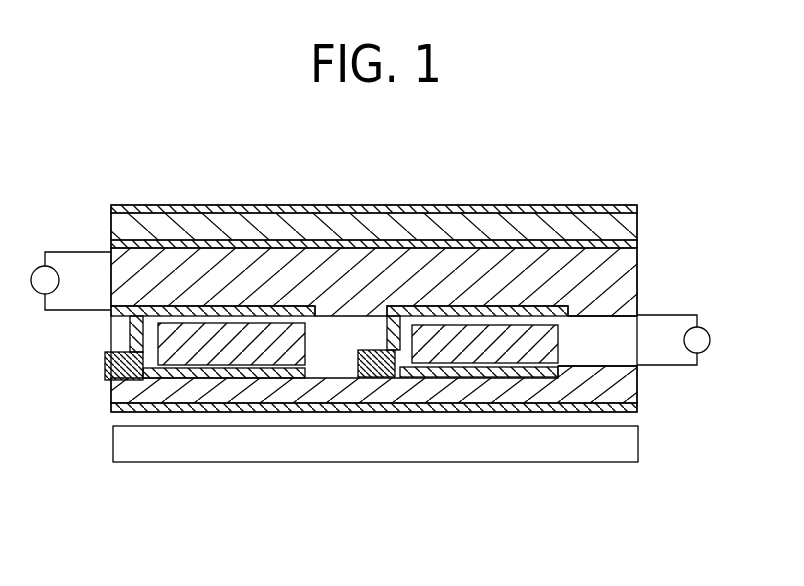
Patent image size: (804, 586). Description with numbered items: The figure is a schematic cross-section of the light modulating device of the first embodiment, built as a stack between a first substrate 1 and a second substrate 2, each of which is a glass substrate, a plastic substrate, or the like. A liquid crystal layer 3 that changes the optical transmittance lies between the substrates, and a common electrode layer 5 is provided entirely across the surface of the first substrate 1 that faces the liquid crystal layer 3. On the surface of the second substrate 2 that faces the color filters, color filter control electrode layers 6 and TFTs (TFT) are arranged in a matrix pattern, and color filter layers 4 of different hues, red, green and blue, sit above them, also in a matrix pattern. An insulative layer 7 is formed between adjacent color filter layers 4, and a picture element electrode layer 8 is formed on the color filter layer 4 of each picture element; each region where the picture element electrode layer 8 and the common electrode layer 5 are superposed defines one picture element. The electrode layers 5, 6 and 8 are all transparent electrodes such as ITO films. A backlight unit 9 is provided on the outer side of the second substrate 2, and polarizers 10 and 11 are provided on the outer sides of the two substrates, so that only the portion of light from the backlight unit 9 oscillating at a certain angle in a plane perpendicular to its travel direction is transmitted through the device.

The first substrate 1 is at (150, 228).
The polarizer 11 is at (250, 210).
The common electrode layer 5 is at (290, 245).
The liquid crystal layer 3 is at (595, 262).
The picture element electrode layer 8 is at (307, 307).
The insulative layer 7 is at (615, 328).
The color filter layer 4 is at (243, 350).
The color filter control electrode layer 6 is at (178, 372).
The element TFT is at (113, 408).
The second substrate 2 is at (335, 395).
The polarizer 10 is at (602, 392).
The backlight unit 9 is at (282, 458).